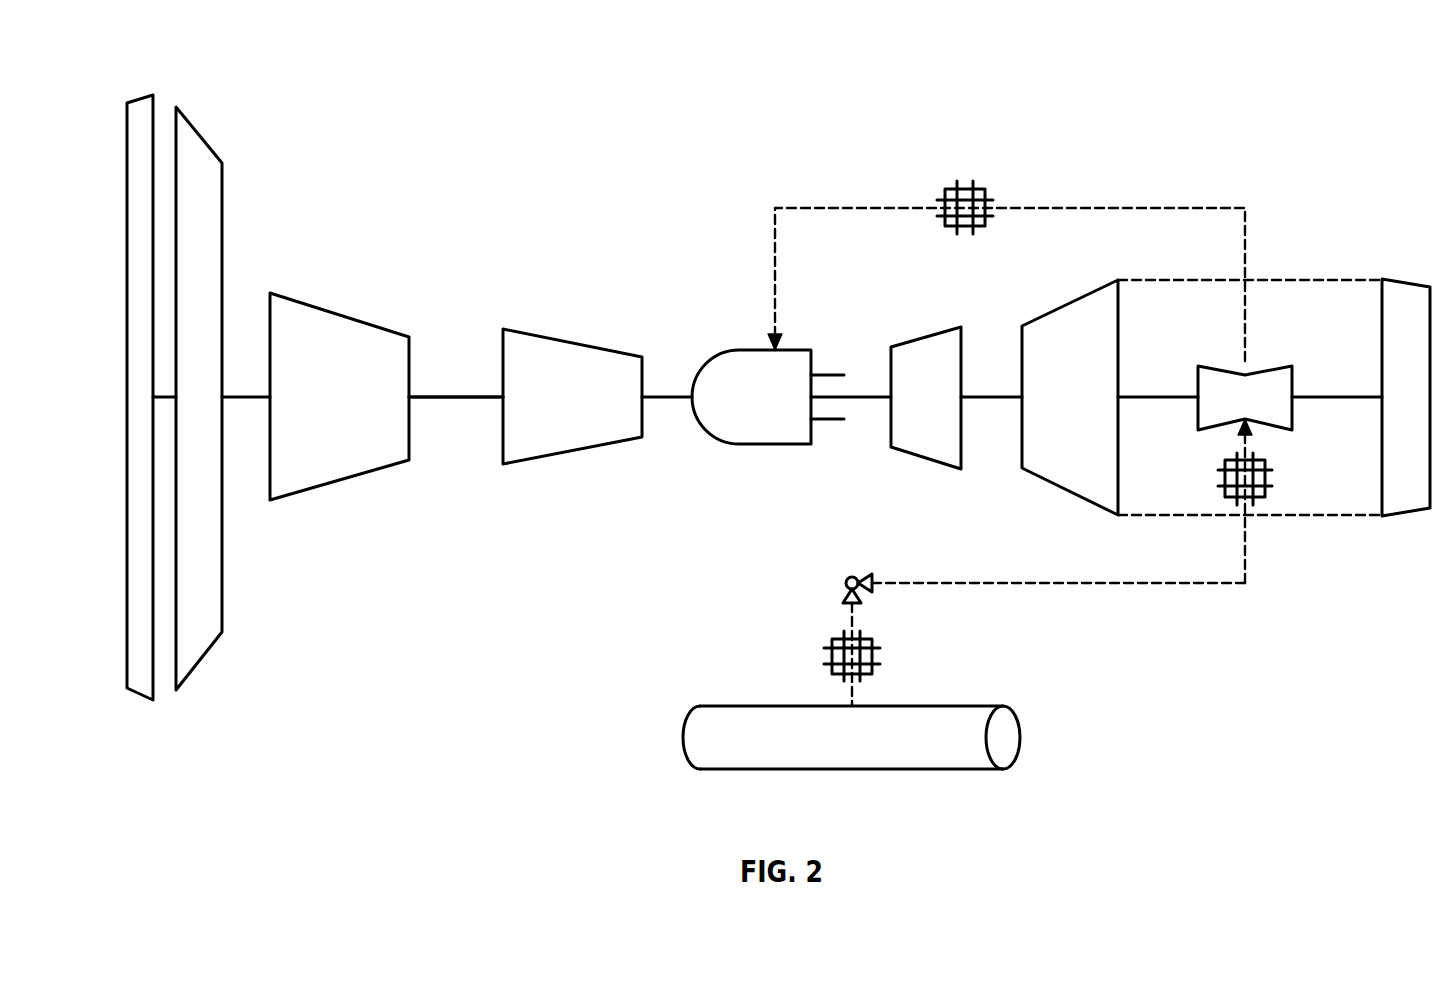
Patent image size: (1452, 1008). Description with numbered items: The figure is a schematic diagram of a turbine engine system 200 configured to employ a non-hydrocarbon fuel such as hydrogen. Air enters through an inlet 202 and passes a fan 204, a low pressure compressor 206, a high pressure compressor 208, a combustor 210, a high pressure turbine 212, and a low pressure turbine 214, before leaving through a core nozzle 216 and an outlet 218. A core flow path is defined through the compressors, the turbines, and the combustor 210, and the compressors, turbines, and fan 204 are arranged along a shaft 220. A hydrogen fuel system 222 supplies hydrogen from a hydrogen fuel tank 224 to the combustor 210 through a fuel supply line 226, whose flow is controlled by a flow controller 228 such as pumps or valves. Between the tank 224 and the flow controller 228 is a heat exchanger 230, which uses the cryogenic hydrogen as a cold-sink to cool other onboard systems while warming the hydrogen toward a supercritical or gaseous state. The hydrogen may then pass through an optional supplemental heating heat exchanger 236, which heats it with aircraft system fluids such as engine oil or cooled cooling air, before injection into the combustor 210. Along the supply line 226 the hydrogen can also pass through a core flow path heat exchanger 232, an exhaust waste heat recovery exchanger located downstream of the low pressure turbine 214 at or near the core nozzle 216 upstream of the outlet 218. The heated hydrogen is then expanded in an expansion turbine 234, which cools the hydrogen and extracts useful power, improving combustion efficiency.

The turbine engine system 200 is at (1330, 88).
The inlet 202 is at (145, 107).
The fan 204 is at (198, 141).
The low pressure compressor 206 is at (323, 320).
The high pressure compressor 208 is at (558, 359).
The combustor 210 is at (790, 357).
The high pressure turbine 212 is at (930, 343).
The low pressure turbine 214 is at (1078, 305).
The core nozzle 216 is at (1335, 518).
The outlet 218 is at (1398, 292).
The shaft 220 is at (432, 394).
The hydrogen fuel system 222 is at (1040, 636).
The hydrogen fuel tank 224 is at (940, 754).
The fuel supply line 226 is at (982, 582).
The flow controller 228 is at (844, 585).
The heat exchanger 230 is at (876, 656).
The core flow path heat exchanger 232 is at (1262, 500).
The expansion turbine 234 is at (1262, 382).
The supplemental heating heat exchanger 236 is at (965, 190).